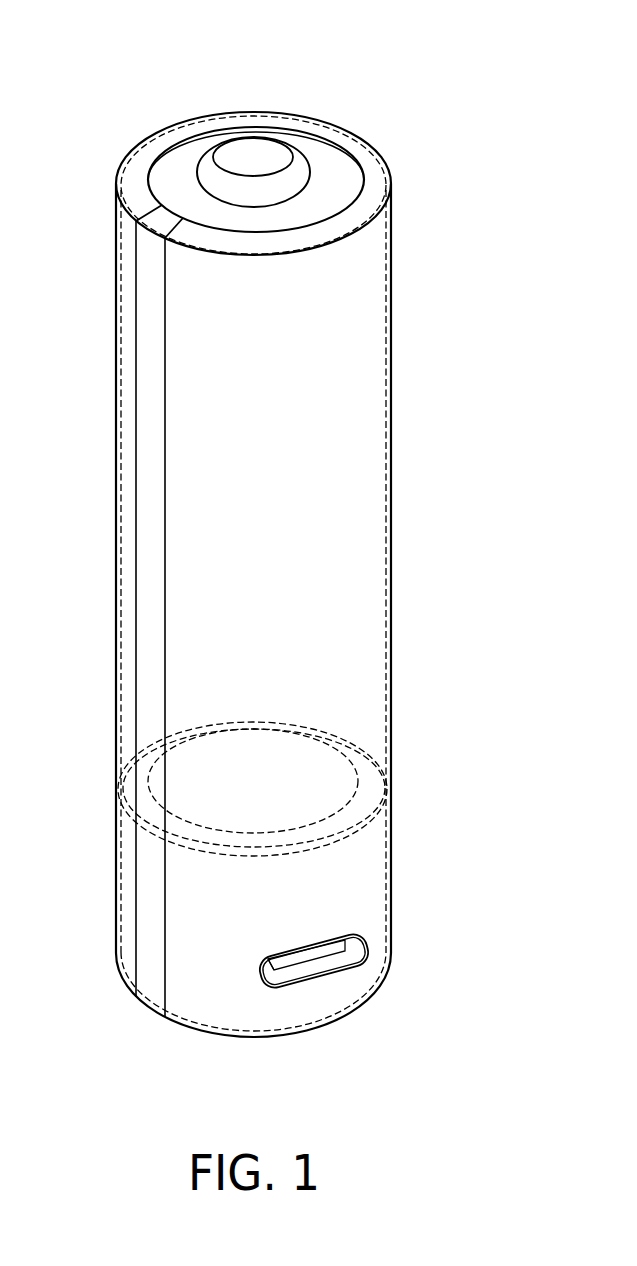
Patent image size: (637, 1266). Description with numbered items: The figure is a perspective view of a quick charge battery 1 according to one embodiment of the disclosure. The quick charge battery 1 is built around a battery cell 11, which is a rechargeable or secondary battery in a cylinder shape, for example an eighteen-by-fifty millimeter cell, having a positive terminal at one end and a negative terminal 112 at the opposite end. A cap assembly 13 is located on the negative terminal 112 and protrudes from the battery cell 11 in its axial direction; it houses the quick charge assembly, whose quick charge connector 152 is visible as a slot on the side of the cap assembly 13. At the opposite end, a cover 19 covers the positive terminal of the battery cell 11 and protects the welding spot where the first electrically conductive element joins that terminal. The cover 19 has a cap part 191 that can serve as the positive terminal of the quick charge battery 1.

The quick charge battery 1 is at (82, 32).
The battery cell 11 is at (362, 489).
The negative terminal 112 is at (322, 760).
The cap assembly 13 is at (391, 880).
The quick charge connector 152 is at (340, 960).
The cover 19 is at (177, 172).
The cap part 191 is at (256, 155).